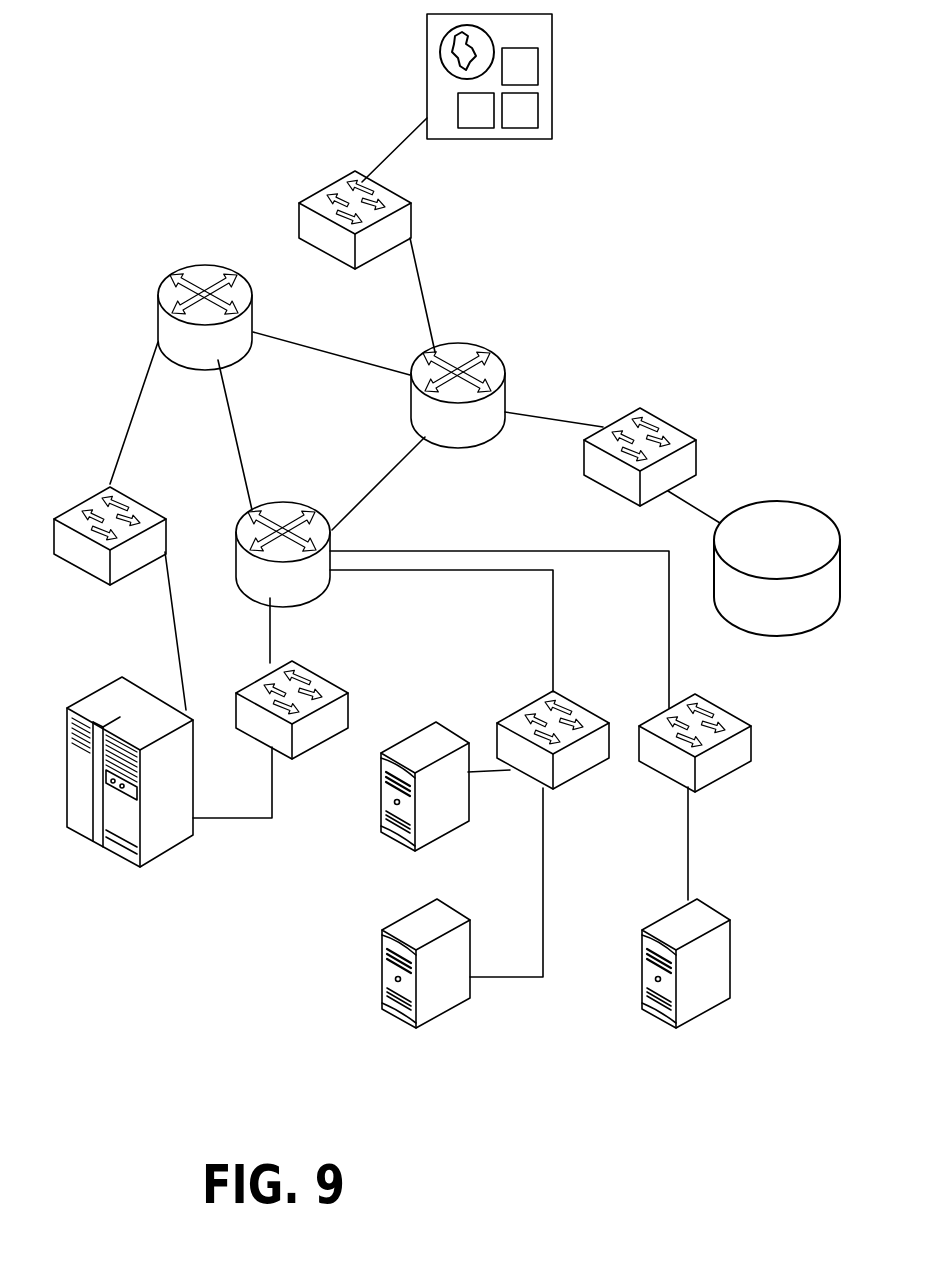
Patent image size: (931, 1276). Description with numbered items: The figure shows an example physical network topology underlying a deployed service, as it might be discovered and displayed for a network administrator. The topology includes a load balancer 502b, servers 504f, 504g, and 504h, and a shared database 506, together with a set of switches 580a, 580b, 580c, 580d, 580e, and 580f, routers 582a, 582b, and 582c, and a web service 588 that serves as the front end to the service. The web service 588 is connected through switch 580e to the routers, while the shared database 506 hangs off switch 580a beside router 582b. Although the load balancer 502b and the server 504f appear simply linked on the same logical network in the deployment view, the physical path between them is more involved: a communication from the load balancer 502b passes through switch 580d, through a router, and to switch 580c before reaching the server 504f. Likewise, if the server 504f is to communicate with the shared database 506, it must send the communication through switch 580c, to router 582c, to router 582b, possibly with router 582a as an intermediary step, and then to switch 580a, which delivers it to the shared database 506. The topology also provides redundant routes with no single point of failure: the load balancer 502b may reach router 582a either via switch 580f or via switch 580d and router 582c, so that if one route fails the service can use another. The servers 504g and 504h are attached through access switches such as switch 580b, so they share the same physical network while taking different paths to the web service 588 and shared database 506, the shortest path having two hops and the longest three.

The web service front end 588 is at (491, 93).
The switch 580e is at (355, 235).
The router 582a is at (205, 329).
The router 582b is at (459, 405).
The switch 580a is at (639, 471).
The shared database 506 is at (775, 581).
The switch 580f is at (111, 549).
The router 582c is at (285, 565).
The switch 580d is at (292, 723).
The switch 580c is at (554, 752).
The switch 580b is at (694, 755).
The load balancer 502b is at (131, 786).
The server 504f is at (425, 801).
The server 504g is at (427, 978).
The server 504h is at (687, 978).